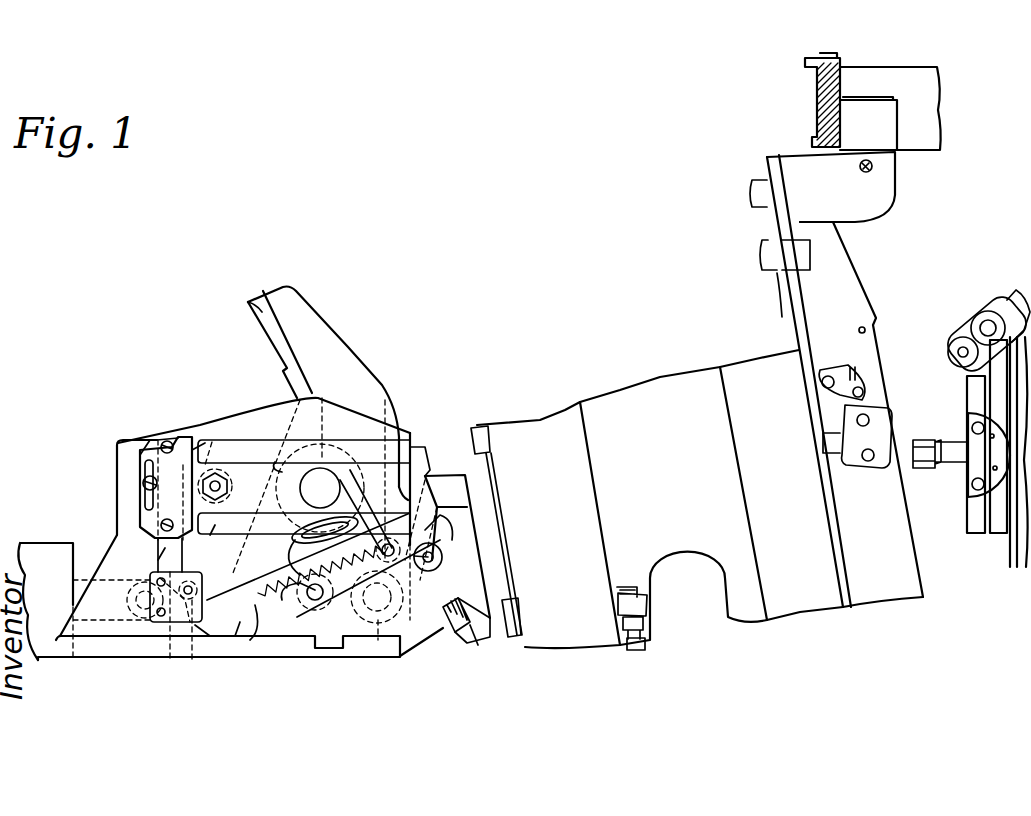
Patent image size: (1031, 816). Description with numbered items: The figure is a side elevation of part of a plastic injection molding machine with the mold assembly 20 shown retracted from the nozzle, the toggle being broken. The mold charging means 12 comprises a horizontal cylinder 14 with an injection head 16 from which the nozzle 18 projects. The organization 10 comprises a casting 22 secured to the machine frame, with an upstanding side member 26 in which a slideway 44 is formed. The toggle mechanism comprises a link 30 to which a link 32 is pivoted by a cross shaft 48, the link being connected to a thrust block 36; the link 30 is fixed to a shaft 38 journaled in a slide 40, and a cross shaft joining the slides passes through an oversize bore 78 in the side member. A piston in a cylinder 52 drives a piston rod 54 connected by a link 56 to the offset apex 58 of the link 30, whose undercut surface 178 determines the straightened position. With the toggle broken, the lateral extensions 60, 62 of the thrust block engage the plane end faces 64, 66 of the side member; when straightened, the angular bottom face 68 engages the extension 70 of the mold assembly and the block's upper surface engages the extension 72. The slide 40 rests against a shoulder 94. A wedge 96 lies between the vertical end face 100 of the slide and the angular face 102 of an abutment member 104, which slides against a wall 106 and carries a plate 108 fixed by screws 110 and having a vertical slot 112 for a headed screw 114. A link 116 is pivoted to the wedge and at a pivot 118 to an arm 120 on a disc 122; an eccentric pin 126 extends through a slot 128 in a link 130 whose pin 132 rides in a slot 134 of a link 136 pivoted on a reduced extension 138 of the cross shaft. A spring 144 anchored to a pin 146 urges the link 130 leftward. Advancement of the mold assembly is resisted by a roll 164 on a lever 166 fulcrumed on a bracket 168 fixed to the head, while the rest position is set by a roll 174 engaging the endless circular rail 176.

The organization 10 is at (167, 310).
The mold charging means 12 is at (968, 593).
The horizontal cylinder 14 is at (1018, 570).
The injection head 16 is at (975, 533).
The nozzle 18 is at (918, 445).
The mold assembly 20 is at (655, 357).
The casting 22 is at (120, 470).
The side member 26 is at (340, 405).
The link 30 is at (335, 348).
The link 32 is at (415, 640).
The thrust block 36 is at (465, 540).
The shaft 38 is at (310, 472).
The slide 40 is at (370, 472).
The slideway 44 is at (275, 462).
The cross shaft 48 is at (376, 645).
The cylinder 52 is at (50, 545).
The piston rod 54 is at (85, 580).
The link 56 is at (219, 648).
The offset apex 58 is at (231, 641).
The lateral extension 60 is at (450, 475).
The lateral extension 62 is at (486, 637).
The plane end face 64 is at (437, 465).
The plane end face 66 is at (457, 634).
The angular bottom face 68 is at (475, 650).
The extension 70 is at (522, 614).
The extension 72 is at (477, 426).
The oversize bore 78 is at (214, 520).
The shoulder 94 is at (400, 420).
The wedge 96 is at (150, 597).
The vertical end face 100 is at (178, 440).
The angular face 102 is at (205, 440).
The abutment member 104 is at (222, 448).
The wall 106 is at (158, 437).
The plate 108 is at (135, 455).
The screws 110 is at (165, 440).
The vertical slot 112 is at (150, 500).
The headed screw 114 is at (145, 485).
The link 116 is at (165, 630).
The pivot 118 is at (192, 640).
The arm 120 is at (275, 630).
The disc 122 is at (328, 620).
The pin 126 is at (293, 585).
The slot 128 is at (262, 590).
The link 130 is at (312, 610).
The pin 132 is at (385, 540).
The slot 134 is at (320, 488).
The link 136 is at (440, 555).
The reduced extension 138 is at (435, 545).
The spring 144 is at (295, 532).
The pin 146 is at (250, 568).
The roll 164 is at (950, 350).
The lever 166 is at (998, 303).
The bracket 168 is at (1025, 296).
The roll 174 is at (890, 128).
The endless circular rail 176 is at (818, 102).
The undercut surface 178 is at (268, 332).